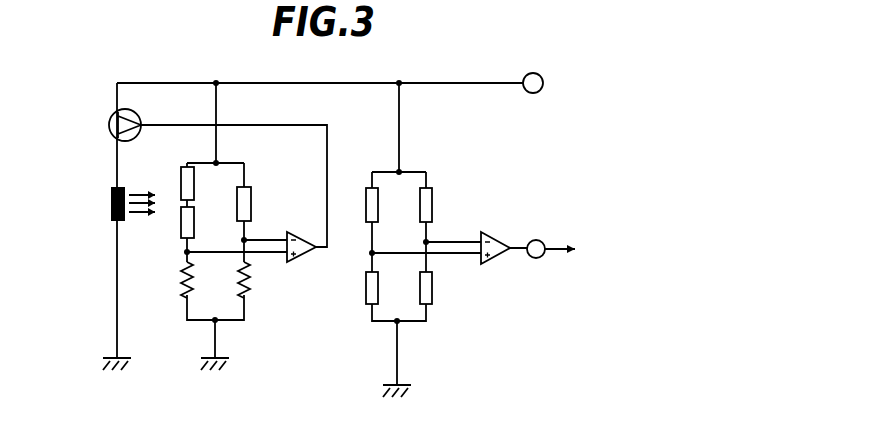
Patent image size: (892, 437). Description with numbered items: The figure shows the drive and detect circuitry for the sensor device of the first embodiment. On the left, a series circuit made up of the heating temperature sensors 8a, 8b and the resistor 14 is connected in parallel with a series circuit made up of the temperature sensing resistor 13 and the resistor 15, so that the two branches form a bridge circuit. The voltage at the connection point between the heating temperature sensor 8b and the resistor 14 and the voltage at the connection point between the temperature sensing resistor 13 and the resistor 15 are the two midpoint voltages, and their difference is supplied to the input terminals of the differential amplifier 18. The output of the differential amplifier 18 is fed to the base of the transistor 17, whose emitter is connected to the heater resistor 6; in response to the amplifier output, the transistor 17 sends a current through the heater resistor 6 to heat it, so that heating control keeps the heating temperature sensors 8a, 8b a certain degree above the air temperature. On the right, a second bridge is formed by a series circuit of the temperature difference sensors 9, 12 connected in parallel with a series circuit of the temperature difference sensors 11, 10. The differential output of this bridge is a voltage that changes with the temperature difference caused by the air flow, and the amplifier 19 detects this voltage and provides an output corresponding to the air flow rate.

The heater resistor 6 is at (110, 207).
The heating temperature sensor 8a is at (182, 186).
The heating temperature sensor 8b is at (182, 230).
The temperature difference sensor 9 is at (365, 205).
The temperature difference sensor 10 is at (433, 290).
The temperature difference sensor 11 is at (433, 210).
The temperature difference sensor 12 is at (365, 290).
The temperature sensing resistor 13 is at (252, 200).
The resistor 14 is at (178, 280).
The resistor 15 is at (252, 278).
The transistor 17 is at (109, 128).
The differential amplifier 18 is at (305, 257).
The amplifier 19 is at (497, 258).